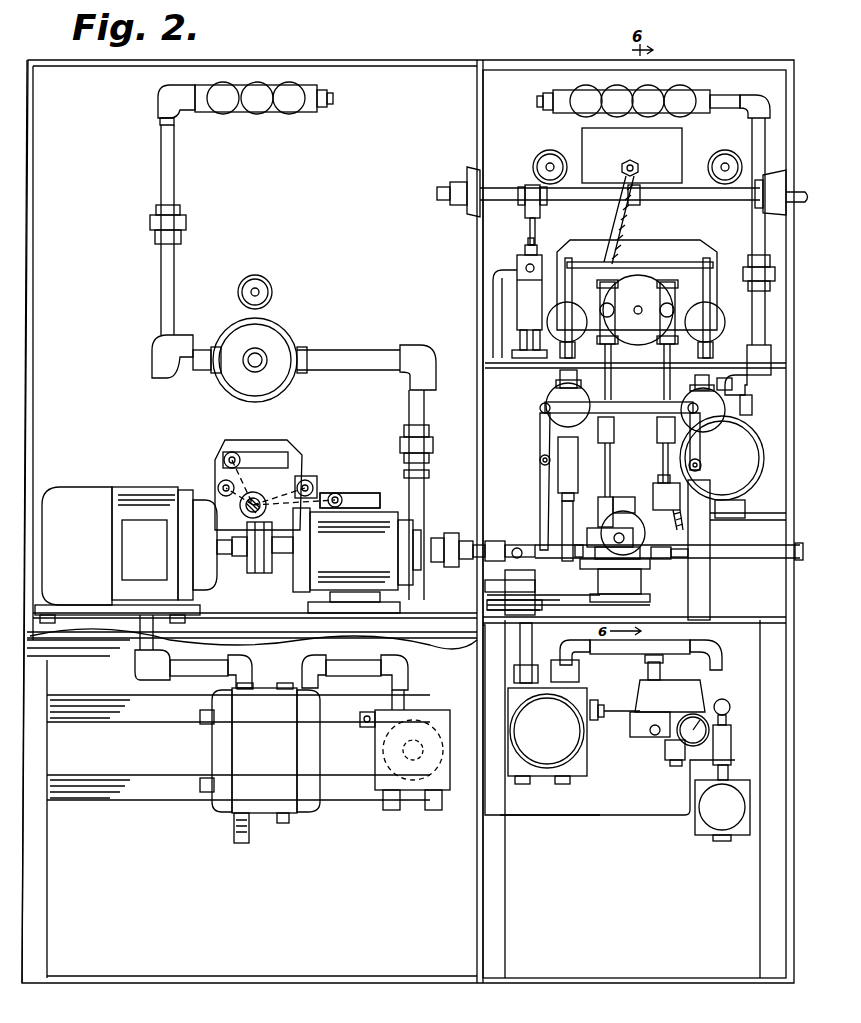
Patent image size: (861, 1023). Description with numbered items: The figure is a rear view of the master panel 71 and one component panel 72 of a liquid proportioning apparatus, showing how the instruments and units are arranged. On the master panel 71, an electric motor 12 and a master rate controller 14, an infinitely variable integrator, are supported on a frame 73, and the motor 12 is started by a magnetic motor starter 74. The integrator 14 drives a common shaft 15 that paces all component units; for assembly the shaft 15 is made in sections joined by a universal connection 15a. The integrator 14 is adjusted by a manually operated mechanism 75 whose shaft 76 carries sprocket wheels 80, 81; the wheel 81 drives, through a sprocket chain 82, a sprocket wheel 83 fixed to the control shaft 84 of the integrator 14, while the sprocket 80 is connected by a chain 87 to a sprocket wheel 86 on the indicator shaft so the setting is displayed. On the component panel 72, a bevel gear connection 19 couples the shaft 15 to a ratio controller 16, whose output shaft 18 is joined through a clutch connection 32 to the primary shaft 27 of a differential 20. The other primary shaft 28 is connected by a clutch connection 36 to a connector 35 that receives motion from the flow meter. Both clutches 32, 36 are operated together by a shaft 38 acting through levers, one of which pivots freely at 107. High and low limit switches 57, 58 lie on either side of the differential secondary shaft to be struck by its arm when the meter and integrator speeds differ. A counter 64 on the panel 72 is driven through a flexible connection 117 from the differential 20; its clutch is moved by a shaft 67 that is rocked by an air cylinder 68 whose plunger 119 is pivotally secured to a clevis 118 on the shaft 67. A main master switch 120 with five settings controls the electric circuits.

The electric motor 12 is at (145, 486).
The master rate controller 14 is at (290, 589).
The shaft 15 is at (500, 545).
The universal connection 15a is at (445, 532).
The ratio controller 16 is at (625, 500).
The output shaft 18 is at (607, 457).
The bevel gear connection 19 is at (636, 530).
The differential 20 is at (650, 287).
The primary shaft 27 is at (600, 380).
The primary shaft 28 is at (700, 388).
The clutch connection 32 is at (603, 430).
The connector 35 is at (645, 491).
The clutch connection 36 is at (632, 403).
The shaft 38 is at (541, 458).
The high limit switch 57 is at (567, 330).
The low limit switch 58 is at (705, 330).
The counter 64 is at (676, 143).
The shaft 67 is at (694, 200).
The air cylinder 68 is at (517, 298).
The master panel 71 is at (342, 72).
The component panel 72 is at (708, 72).
The frame 73 is at (247, 642).
The magnetic motor starter 74 is at (244, 788).
The manually operated mechanism 75 is at (286, 438).
The shaft 76 is at (255, 545).
The sprocket wheel 80 is at (248, 512).
The sprocket wheel 81 is at (256, 500).
The sprocket chain 82 is at (318, 485).
The sprocket wheel 83 is at (340, 494).
The control shaft 84 is at (342, 497).
The sprocket wheel 86 is at (226, 455).
The chain 87 is at (221, 478).
The pivot 107 is at (701, 466).
The flexible connection 117 is at (620, 222).
The clevis 118 is at (518, 192).
The plunger 119 is at (528, 208).
The main master switch 120 is at (292, 320).